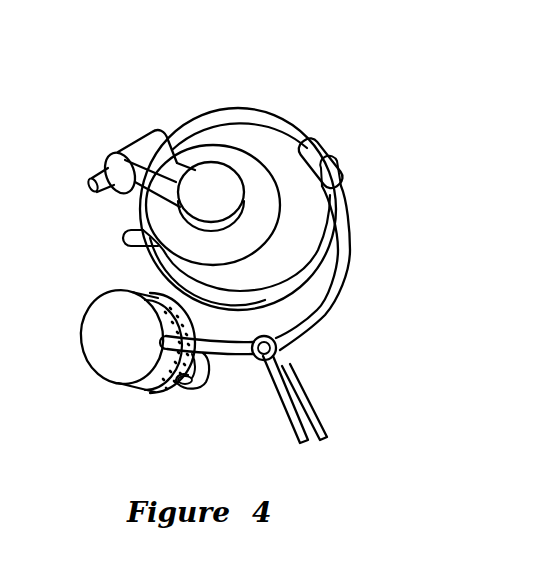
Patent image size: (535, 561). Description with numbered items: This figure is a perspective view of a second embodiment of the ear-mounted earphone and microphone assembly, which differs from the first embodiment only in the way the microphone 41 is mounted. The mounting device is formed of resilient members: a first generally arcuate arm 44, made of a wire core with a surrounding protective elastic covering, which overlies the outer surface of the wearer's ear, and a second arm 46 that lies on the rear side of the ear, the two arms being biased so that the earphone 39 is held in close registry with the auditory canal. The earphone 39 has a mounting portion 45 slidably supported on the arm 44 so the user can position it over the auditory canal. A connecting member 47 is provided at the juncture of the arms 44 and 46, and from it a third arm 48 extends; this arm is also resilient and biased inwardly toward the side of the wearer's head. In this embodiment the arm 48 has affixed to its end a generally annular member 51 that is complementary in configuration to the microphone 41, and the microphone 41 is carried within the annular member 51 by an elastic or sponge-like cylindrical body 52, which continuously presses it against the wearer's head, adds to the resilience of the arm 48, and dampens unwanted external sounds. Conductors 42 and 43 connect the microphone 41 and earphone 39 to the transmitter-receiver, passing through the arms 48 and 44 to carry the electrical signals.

The earphone 39 is at (263, 211).
The microphone 41 is at (172, 393).
The conductor 42 is at (310, 413).
The conductor 43 is at (290, 418).
The first arcuate arm 44 is at (236, 111).
The mounting portion 45 is at (108, 156).
The second arm 46 is at (293, 289).
The connecting member 47 is at (338, 148).
The third arm 48 is at (340, 268).
The annular member 51 is at (96, 318).
The elastic cylindrical body 52 is at (147, 393).